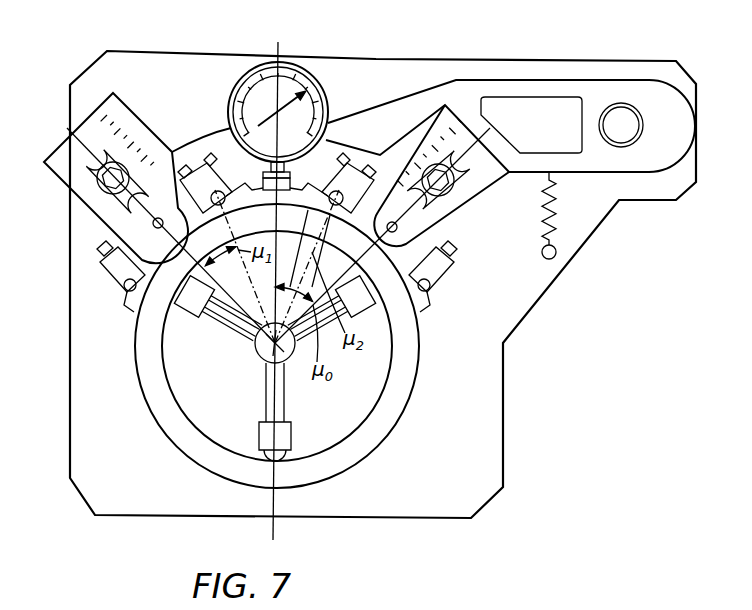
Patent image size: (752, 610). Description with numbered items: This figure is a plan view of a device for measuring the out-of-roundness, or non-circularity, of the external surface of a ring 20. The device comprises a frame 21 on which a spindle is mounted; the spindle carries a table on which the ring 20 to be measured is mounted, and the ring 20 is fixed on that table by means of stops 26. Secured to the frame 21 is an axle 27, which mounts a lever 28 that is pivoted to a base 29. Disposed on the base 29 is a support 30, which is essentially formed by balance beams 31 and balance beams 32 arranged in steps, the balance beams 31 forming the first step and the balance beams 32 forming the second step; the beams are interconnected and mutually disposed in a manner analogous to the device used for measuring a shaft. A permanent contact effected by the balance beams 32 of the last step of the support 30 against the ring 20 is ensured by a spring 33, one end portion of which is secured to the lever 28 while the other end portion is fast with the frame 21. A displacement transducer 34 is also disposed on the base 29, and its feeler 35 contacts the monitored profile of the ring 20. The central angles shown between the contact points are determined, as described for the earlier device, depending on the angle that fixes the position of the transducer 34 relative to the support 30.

The ring 20 is at (388, 417).
The frame 21 is at (72, 440).
The stops 26 is at (172, 305).
The axle 27 is at (623, 113).
The lever 28 is at (487, 97).
The base 29 is at (203, 148).
The support 30 is at (90, 278).
The balance beams 31 is at (446, 243).
The balance beams 32 is at (430, 305).
The spring 33 is at (556, 212).
The displacement transducer 34 is at (302, 70).
The feeler 35 is at (292, 180).